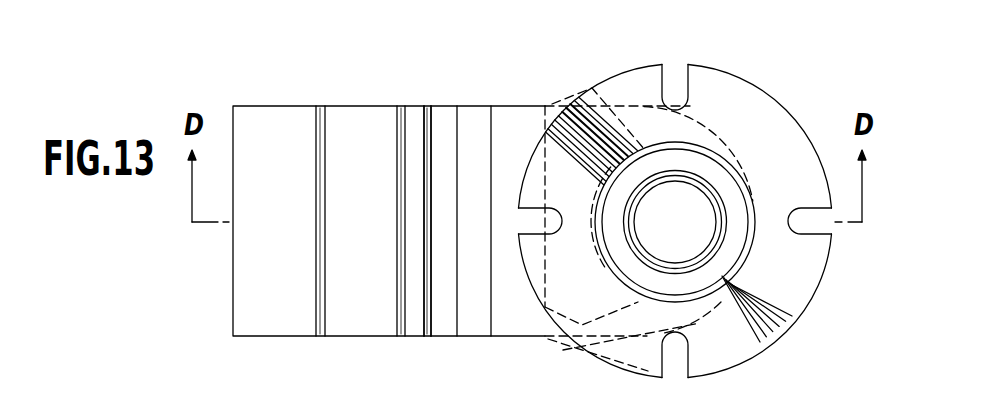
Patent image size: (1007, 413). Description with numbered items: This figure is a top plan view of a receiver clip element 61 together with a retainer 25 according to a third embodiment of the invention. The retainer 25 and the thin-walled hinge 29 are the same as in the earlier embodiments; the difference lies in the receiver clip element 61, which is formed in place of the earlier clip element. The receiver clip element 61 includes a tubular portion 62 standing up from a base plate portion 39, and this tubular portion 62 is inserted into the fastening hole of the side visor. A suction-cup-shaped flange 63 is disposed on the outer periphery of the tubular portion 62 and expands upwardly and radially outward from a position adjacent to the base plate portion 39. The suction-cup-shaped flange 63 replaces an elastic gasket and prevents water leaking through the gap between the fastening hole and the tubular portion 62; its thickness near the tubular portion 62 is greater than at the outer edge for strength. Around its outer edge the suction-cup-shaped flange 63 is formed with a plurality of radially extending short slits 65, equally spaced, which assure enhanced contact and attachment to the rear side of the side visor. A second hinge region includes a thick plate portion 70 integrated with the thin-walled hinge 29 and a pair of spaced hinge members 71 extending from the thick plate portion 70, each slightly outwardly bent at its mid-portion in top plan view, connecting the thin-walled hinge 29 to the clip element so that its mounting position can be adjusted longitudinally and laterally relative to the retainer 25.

The retainer 25 is at (339, 106).
The thin-walled hinge 29 is at (475, 323).
The base plate portion 39 is at (513, 106).
The receiver clip element 61 is at (767, 89).
The tubular portion 62 is at (710, 271).
The suction-cup-shaped flange 63 is at (790, 127).
The short slits 65 is at (668, 80).
The thick plate portion 70 is at (540, 115).
The hinge members 71 is at (568, 100).